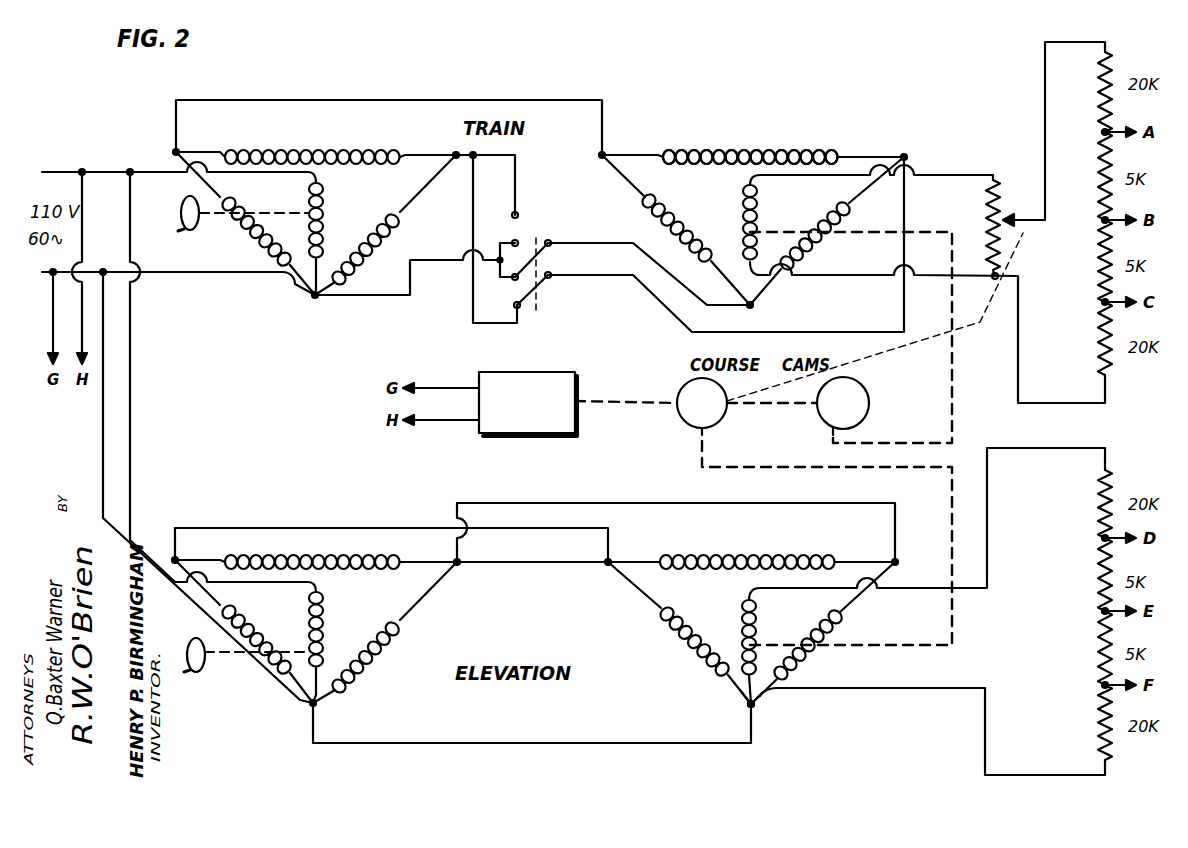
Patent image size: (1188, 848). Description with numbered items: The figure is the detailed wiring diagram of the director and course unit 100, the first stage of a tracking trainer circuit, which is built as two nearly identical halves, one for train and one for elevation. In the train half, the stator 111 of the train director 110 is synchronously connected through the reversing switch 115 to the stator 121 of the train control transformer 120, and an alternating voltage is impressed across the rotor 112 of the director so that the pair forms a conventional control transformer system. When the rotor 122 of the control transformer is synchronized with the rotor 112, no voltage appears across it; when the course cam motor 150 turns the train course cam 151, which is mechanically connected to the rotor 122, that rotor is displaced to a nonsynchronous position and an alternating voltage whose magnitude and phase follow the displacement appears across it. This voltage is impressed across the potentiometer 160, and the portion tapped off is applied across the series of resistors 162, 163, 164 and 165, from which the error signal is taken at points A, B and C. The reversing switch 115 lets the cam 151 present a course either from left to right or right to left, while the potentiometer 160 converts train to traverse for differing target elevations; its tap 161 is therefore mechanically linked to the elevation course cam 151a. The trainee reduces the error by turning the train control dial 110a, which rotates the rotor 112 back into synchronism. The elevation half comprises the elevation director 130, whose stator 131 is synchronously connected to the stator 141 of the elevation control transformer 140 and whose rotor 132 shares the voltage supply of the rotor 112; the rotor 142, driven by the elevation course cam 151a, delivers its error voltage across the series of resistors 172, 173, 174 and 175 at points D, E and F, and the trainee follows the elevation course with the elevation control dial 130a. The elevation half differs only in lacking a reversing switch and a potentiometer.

The director and course unit 100 is at (638, 408).
The train director 110 is at (296, 292).
The train control dial 110a is at (190, 232).
The stator 111 is at (408, 232).
The rotor 112 is at (326, 214).
The reversing switch 115 is at (523, 230).
The train control transformer 120 is at (655, 233).
The stator 121 is at (808, 149).
The rotor 122 is at (740, 214).
The elevation director 130 is at (300, 703).
The elevation control dial 130a is at (190, 672).
The stator 131 is at (400, 641).
The rotor 132 is at (326, 624).
The elevation control transformer 140 is at (768, 708).
The stator 141 is at (800, 663).
The rotor 142 is at (740, 630).
The course cam motor 150 is at (533, 380).
The train course cam 151 is at (852, 392).
The elevation course cam 151a is at (693, 388).
The potentiometer 160 is at (990, 203).
The potentiometer tap 161 is at (1015, 223).
The resistor 162 is at (1100, 92).
The resistor 163 is at (1100, 172).
The resistor 164 is at (1100, 270).
The resistor 165 is at (1100, 343).
The resistor 172 is at (1100, 508).
The resistor 173 is at (1100, 578).
The resistor 174 is at (1100, 650).
The resistor 175 is at (1100, 728).